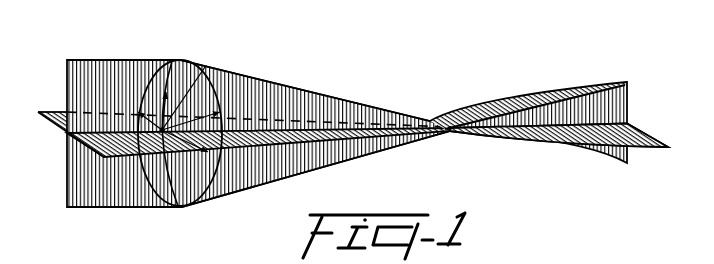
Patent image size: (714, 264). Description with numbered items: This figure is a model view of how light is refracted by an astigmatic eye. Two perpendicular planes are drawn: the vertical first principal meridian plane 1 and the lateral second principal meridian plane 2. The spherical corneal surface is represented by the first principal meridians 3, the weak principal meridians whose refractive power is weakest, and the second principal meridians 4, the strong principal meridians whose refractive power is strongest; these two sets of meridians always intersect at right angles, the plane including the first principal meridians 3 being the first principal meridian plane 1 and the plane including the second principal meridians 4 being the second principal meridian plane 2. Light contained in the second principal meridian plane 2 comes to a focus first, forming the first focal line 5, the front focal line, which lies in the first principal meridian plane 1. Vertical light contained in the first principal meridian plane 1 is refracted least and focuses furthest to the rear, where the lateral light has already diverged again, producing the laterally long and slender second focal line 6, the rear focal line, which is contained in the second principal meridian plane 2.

The first principal meridian plane 1 is at (108, 58).
The second principal meridian plane 2 is at (52, 110).
The first principal meridians 3 is at (176, 60).
The second principal meridians 4 is at (205, 67).
The first focal line 5 is at (366, 102).
The second focal line 6 is at (462, 125).